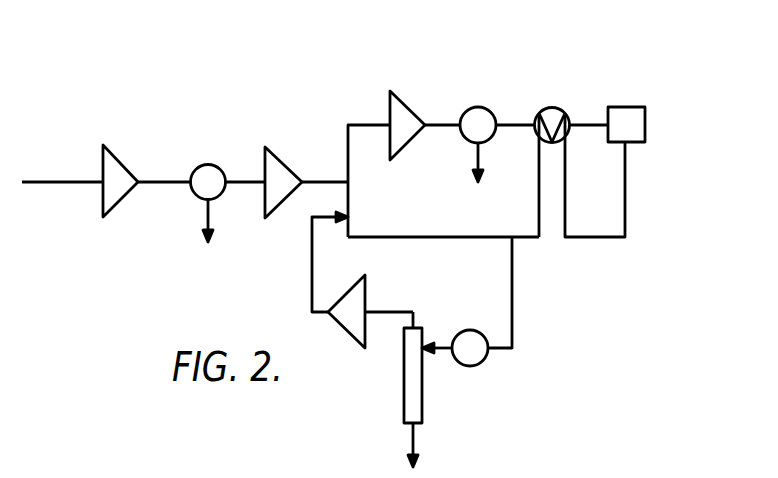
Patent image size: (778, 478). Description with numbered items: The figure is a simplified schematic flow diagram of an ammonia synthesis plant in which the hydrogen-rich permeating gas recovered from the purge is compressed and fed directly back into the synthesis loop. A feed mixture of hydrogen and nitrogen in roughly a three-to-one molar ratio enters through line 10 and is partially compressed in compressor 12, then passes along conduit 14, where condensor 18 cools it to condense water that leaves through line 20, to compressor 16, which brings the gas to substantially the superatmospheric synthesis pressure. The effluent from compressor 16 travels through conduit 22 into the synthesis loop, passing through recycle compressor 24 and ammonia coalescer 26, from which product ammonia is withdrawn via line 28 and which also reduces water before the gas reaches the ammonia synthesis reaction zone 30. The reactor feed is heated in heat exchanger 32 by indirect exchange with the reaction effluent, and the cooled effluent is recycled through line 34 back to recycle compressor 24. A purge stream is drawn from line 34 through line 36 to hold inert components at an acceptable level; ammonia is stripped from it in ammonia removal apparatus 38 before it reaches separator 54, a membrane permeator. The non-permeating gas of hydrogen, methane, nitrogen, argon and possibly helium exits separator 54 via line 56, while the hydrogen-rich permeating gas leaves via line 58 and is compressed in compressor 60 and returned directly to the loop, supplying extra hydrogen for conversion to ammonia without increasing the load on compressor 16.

The line 10 is at (61, 178).
The compressor 12 is at (118, 158).
The conduit 14 is at (163, 180).
The compressor 16 is at (278, 152).
The condensor 18 is at (215, 165).
The line 20 is at (206, 213).
The conduit 22 is at (326, 178).
The recycle compressor 24 is at (408, 104).
The ammonia coalescer 26 is at (488, 106).
The line 28 is at (483, 153).
The ammonia synthesis reaction zone 30 is at (628, 106).
The heat exchanger 32 is at (558, 106).
The line 34 is at (407, 236).
The line 36 is at (513, 288).
The ammonia removal apparatus 38 is at (481, 364).
The separator 54 is at (404, 395).
The line 56 is at (415, 433).
The line 58 is at (312, 278).
The compressor 60 is at (366, 292).